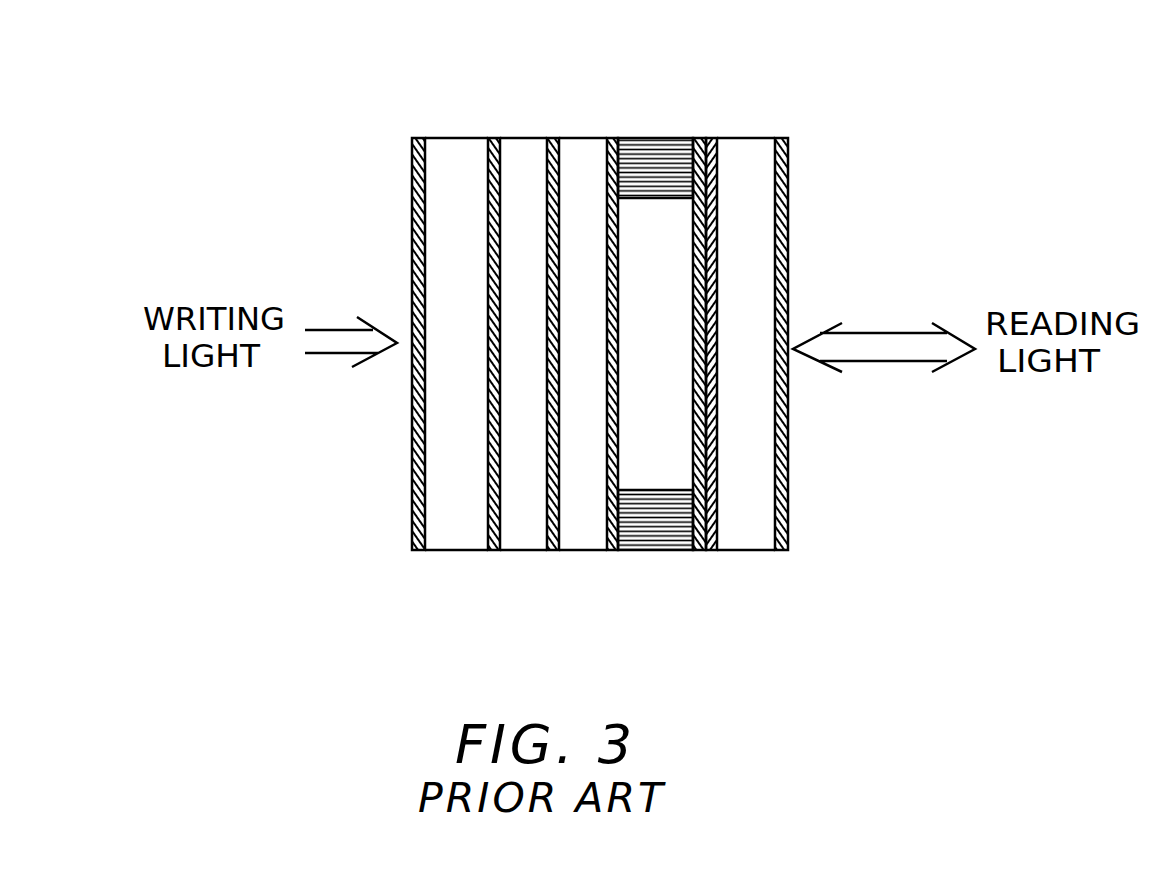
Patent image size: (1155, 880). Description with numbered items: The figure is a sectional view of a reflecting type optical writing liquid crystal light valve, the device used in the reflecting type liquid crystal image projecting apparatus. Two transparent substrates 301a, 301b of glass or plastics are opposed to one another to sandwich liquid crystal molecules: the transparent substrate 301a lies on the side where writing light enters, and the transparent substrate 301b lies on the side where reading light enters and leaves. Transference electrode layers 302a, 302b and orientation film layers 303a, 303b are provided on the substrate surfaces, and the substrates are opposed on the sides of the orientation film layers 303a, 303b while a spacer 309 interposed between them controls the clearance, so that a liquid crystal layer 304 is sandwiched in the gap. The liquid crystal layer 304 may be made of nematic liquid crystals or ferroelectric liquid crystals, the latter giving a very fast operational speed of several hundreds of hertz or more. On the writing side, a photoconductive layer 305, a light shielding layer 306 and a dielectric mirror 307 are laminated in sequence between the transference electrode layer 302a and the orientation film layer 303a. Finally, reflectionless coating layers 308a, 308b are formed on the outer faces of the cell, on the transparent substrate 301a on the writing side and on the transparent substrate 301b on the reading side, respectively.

The transparent substrate 301a is at (445, 535).
The transparent substrate 301b is at (753, 535).
The transference electrode layer 302a is at (493, 138).
The transference electrode layer 302b is at (713, 138).
The orientation film layer 303a is at (613, 138).
The orientation film layer 303b is at (703, 138).
The liquid crystal layer 304 is at (655, 472).
The photoconductive layer 305 is at (520, 535).
The light shielding layer 306 is at (553, 138).
The dielectric mirror 307 is at (578, 535).
The reflectionless coating layer 308a is at (418, 138).
The reflectionless coating layer 308b is at (782, 138).
The spacer 309 is at (667, 540).